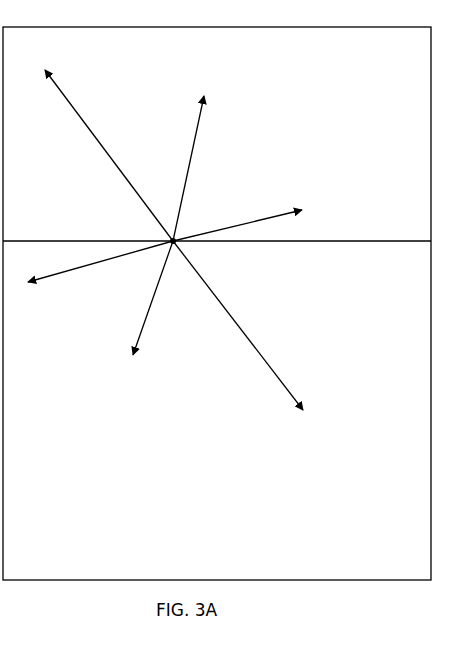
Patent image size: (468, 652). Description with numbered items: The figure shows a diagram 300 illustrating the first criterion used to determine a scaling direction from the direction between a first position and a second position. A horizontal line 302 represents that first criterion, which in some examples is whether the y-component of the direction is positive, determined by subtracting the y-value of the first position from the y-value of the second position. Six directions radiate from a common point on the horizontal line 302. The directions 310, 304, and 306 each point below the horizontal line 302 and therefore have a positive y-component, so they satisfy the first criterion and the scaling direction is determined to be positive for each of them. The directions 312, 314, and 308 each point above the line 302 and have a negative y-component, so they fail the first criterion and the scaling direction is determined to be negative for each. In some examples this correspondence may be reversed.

The ophthalmic lens / frame 300 is at (3, 426).
The horizontal line 302 is at (383, 242).
The direction 304 is at (140, 342).
The direction 306 is at (246, 333).
The direction 308 is at (246, 215).
The direction 310 is at (74, 270).
The direction 312 is at (73, 108).
The direction 314 is at (200, 120).